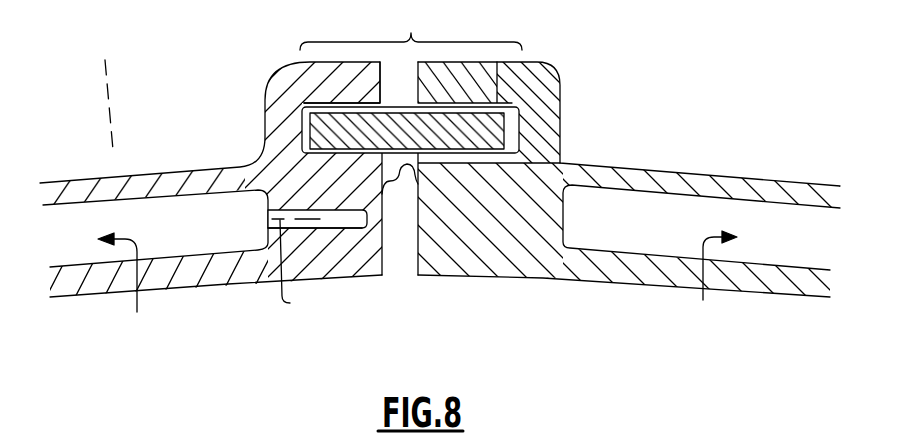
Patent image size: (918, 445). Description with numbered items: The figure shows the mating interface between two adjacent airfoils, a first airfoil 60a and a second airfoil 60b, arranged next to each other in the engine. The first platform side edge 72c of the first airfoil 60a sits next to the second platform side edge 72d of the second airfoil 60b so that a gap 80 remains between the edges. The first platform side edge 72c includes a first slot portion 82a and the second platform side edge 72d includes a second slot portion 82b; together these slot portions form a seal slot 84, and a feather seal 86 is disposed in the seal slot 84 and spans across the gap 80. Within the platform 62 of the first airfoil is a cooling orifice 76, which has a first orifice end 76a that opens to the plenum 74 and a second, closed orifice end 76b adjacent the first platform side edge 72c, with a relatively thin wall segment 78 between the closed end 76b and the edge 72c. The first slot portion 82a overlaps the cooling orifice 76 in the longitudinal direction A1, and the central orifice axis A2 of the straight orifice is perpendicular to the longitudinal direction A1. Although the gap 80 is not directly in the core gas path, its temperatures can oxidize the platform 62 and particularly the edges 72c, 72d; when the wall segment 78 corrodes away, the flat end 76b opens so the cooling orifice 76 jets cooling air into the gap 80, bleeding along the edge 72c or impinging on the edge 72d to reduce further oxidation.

The first airfoil 60a is at (193, 293).
The second airfoil 60b is at (643, 292).
The platform 62 is at (228, 284).
The first platform side edge 72c is at (375, 212).
The second platform side edge 72d is at (408, 247).
The plenum 74 is at (137, 312).
The cooling orifice 76 is at (311, 210).
The first orifice end 76a is at (266, 218).
The second, closed orifice end 76b is at (352, 224).
The wall segment 78 is at (386, 196).
The gap 80 is at (500, 162).
The first slot portion 82a is at (346, 103).
The second slot portion 82b is at (461, 103).
The seal slot 84 is at (411, 33).
The feather seal 86 is at (522, 133).
The longitudinal direction A1 is at (110, 92).
The central orifice axis A2 is at (298, 267).